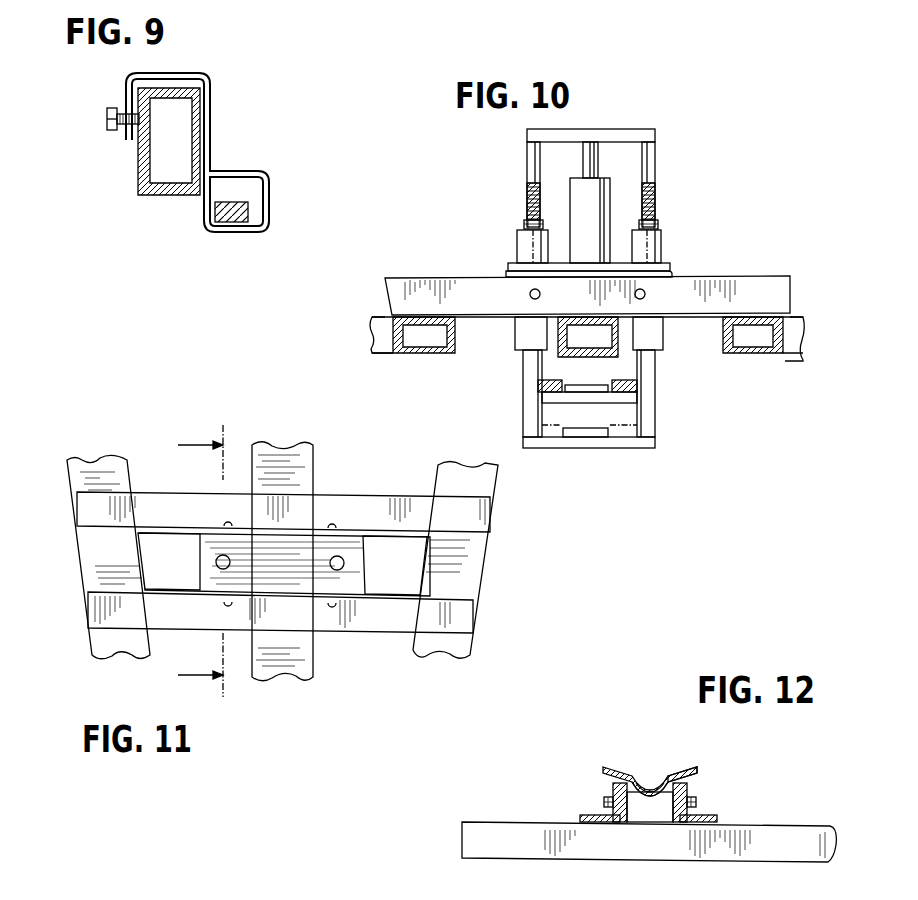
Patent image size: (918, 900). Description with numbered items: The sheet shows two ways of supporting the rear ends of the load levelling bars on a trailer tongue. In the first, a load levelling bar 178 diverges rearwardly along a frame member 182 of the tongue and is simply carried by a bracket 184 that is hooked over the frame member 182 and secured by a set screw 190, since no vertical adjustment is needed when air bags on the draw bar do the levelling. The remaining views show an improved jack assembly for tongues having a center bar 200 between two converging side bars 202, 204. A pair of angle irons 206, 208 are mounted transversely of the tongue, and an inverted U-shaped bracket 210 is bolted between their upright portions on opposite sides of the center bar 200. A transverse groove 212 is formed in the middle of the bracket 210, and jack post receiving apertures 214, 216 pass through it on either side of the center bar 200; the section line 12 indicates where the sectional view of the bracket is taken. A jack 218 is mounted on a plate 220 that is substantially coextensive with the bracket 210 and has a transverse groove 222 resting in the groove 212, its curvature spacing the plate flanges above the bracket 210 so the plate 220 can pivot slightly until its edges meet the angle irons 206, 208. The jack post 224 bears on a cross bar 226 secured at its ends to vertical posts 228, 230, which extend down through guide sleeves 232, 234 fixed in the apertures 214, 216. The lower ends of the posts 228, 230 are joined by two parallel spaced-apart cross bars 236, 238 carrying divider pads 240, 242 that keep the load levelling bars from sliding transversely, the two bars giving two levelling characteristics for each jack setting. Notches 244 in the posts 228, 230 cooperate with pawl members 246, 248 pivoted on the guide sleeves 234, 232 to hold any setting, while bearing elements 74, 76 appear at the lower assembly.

In FIG. 9, the load levelling bar 178 is at (240, 210).
In FIG. 9, the frame member 182 is at (138, 172).
In FIG. 9, the bracket 184 is at (212, 100).
In FIG. 9, the set screw 190 is at (107, 115).
In FIG. 10, the cross bar 226 is at (625, 132).
In FIG. 10, the post 228 is at (535, 165).
In FIG. 10, the post 230 is at (655, 155).
In FIG. 10, the notches 244 is at (527, 192).
In FIG. 10, the post 224 is at (585, 157).
In FIG. 10, the jack 218 is at (594, 207).
In FIG. 10, the pawl member 248 is at (524, 225).
In FIG. 10, the pawl member 246 is at (653, 224).
In FIG. 10, the guide sleeve 232 is at (525, 244).
In FIG. 10, the guide sleeve 234 is at (660, 246).
In FIG. 10, the plate 220 is at (660, 272).
In FIG. 12, the plate 220 is at (693, 768).
In FIG. 10, the angle iron 206 is at (736, 296).
In FIG. 11, the angle iron 206 is at (350, 618).
In FIG. 12, the angle iron 206 is at (705, 815).
In FIG. 10, the side bar 202 is at (430, 355).
In FIG. 11, the side bar 202 is at (90, 554).
In FIG. 10, the side bar 204 is at (770, 355).
In FIG. 11, the side bar 204 is at (475, 549).
In FIG. 10, the center bar 200 is at (581, 350).
In FIG. 11, the center bar 200 is at (313, 458).
In FIG. 12, the center bar 200 is at (503, 835).
In FIG. 10, the cross bar 236 is at (638, 449).
In FIG. 10, the cross bar 238 is at (625, 397).
In FIG. 10, the left bearing 76 is at (540, 383).
In FIG. 10, the right bearing 74 is at (640, 383).
In FIG. 10, the divider pad 242 is at (582, 390).
In FIG. 10, the divider pad 240 is at (588, 438).
In FIG. 11, the section line 12 is at (200, 564).
In FIG. 11, the angle iron 208 is at (410, 510).
In FIG. 12, the angle iron 208 is at (590, 815).
In FIG. 11, the jack post receiving aperture 216 is at (334, 560).
In FIG. 11, the groove 212 is at (200, 552).
In FIG. 12, the groove 212 is at (650, 804).
In FIG. 11, the bracket 210 is at (395, 565).
In FIG. 12, the bracket 210 is at (692, 796).
In FIG. 11, the jack post receiving aperture 214 is at (222, 572).
In FIG. 12, the jack post receiving aperture 214 is at (604, 772).
In FIG. 12, the groove 222 is at (656, 783).